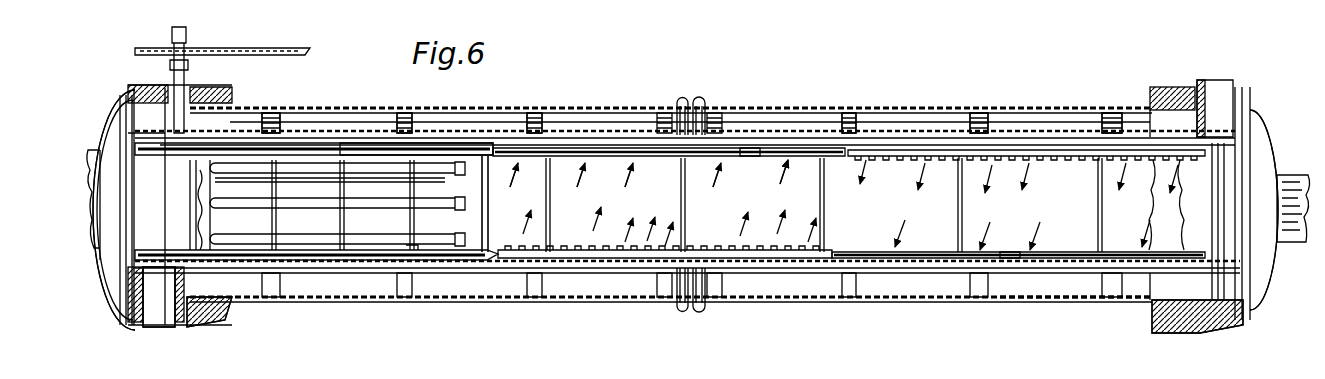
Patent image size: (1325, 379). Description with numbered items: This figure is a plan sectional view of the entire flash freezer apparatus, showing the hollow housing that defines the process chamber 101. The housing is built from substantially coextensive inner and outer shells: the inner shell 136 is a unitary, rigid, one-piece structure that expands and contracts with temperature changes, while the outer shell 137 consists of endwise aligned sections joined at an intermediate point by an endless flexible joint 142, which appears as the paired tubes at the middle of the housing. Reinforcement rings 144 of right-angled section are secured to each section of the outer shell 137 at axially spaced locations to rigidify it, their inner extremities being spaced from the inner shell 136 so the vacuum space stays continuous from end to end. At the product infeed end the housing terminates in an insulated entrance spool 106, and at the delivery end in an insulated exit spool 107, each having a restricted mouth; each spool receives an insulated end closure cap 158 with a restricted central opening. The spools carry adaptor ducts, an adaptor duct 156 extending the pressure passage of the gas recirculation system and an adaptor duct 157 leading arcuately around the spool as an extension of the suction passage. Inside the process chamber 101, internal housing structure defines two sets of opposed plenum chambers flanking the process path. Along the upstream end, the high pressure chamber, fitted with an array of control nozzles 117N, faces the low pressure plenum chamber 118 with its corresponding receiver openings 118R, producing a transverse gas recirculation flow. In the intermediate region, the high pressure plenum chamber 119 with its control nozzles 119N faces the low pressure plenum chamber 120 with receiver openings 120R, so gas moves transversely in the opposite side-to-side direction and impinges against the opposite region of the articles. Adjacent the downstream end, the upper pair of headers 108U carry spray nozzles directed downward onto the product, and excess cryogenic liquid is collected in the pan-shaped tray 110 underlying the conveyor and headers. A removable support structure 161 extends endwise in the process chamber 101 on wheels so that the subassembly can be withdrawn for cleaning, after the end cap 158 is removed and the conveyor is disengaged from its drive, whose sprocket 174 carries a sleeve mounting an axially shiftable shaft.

The sprocket 174 is at (192, 47).
The adaptor duct 157 is at (163, 138).
The low pressure plenum chamber 120 is at (603, 152).
The control nozzles 117N is at (908, 150).
The control nozzles 119N is at (573, 260).
The low pressure plenum chamber 118 is at (940, 255).
The high pressure plenum chamber 119 is at (492, 255).
The tray 110 is at (481, 200).
The upper pair of headers 108U is at (384, 212).
The flexible joint 142 is at (700, 97).
The reinforcement rings 144 is at (300, 104).
The removable support structure 161 is at (345, 157).
The outer shell 137 is at (543, 104).
The inner shell 136 is at (875, 130).
The receiver openings 120R is at (753, 156).
The receiver openings 118R is at (1010, 250).
The process chamber 101 is at (1068, 237).
The end closure cap 158 is at (110, 278).
The adaptor duct 156 is at (157, 313).
The exit spool 107 is at (208, 326).
The entrance spool 106 is at (1176, 331).